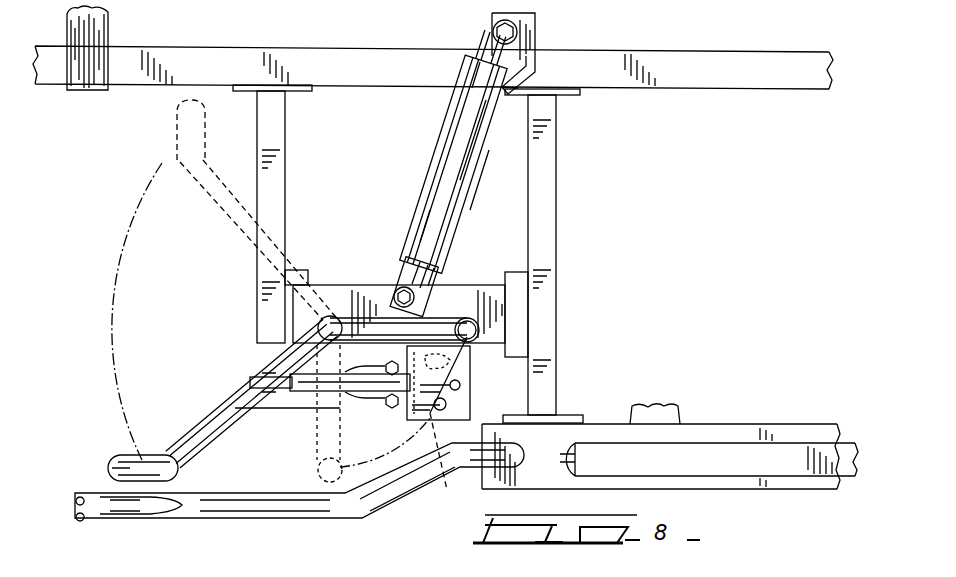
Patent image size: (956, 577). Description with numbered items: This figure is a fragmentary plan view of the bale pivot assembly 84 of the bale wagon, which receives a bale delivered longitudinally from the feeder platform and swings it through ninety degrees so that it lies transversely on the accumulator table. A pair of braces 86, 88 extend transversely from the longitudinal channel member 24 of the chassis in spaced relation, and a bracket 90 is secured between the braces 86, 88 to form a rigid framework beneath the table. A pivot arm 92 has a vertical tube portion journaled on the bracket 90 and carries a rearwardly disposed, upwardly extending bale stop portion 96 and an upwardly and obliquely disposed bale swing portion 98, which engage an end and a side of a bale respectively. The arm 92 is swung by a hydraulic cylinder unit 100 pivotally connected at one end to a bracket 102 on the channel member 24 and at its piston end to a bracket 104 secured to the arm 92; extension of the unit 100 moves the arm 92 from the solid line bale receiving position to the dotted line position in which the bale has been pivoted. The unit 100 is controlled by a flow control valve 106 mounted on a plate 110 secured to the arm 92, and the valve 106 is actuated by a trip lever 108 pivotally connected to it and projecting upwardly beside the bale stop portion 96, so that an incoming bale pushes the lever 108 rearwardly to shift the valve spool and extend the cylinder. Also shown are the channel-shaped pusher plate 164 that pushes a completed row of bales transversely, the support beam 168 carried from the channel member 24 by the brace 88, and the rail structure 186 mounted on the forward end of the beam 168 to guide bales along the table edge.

The longitudinal channel member 24 is at (322, 50).
The bale pivot assembly 84 is at (226, 387).
The brace 86 is at (286, 174).
The brace 88 is at (557, 190).
The bracket 90 is at (328, 290).
The pivot arm 92 is at (362, 316).
The bale stop portion 96 is at (467, 318).
The bale swing portion 98 is at (198, 438).
The hydraulic cylinder unit 100 is at (440, 172).
The bracket 102 is at (538, 28).
The bracket 104 is at (416, 298).
The flow control valve 106 is at (393, 426).
The trip lever 108 is at (470, 404).
The plate 110 is at (283, 408).
The pusher plate 164 is at (790, 443).
The support beam 168 is at (752, 490).
The rail structure 186 is at (192, 523).